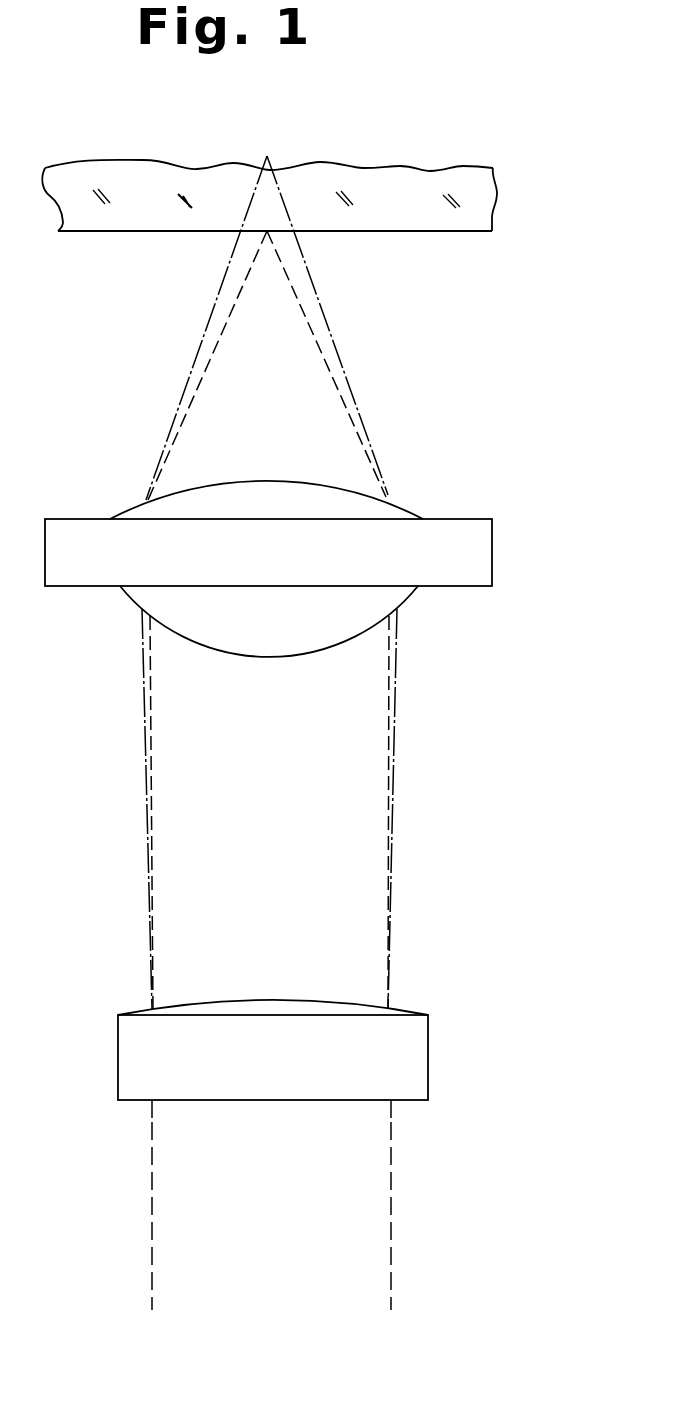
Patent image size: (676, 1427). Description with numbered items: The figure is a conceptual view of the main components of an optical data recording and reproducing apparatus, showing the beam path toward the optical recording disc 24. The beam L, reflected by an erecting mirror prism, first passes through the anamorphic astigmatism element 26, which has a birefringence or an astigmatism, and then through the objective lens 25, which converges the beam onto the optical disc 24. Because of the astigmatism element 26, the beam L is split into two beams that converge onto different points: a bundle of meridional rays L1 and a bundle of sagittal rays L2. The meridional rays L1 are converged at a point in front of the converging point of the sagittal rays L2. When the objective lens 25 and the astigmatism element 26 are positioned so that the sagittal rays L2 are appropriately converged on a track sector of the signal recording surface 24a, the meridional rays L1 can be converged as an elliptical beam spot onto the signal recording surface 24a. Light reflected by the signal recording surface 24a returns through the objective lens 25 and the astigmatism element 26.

The optical recording disc 24 is at (437, 167).
The signal recording surface 24a is at (473, 232).
The objective lens 25 is at (467, 510).
The anamorphic astigmatism element 26 is at (437, 1008).
The meridional rays L1 is at (350, 390).
The sagittal rays L2 is at (340, 353).
The beam L is at (398, 1243).